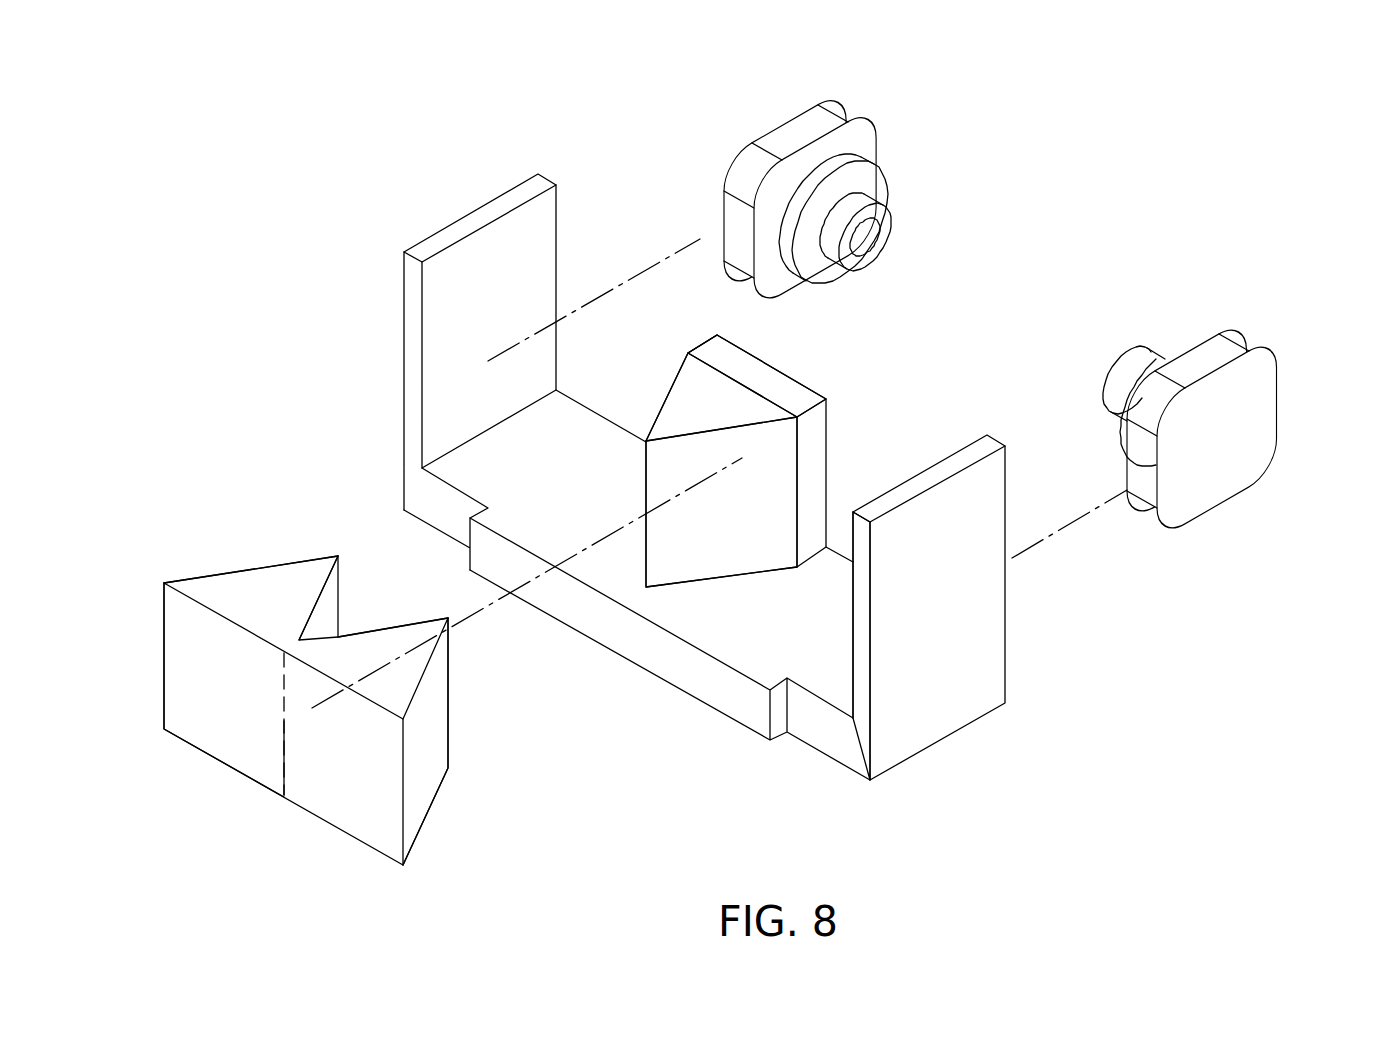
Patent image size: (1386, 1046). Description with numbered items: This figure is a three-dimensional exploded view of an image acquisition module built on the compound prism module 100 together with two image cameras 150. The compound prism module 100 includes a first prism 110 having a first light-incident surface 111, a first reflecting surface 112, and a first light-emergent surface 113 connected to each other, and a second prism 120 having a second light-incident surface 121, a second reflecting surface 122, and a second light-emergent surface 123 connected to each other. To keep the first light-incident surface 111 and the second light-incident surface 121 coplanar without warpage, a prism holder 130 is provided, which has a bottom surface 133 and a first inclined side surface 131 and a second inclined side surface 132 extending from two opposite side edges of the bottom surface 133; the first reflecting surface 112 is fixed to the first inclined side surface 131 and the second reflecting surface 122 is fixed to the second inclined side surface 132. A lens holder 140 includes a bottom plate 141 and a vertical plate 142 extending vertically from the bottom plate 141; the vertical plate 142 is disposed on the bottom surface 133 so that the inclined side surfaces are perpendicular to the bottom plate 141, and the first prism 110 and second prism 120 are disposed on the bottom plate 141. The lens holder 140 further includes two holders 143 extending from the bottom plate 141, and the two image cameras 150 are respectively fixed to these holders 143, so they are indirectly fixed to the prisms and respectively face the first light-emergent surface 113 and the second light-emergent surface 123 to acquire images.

The compound prism module 100 is at (364, 357).
The first prism 110 is at (403, 683).
The first light-incident surface 111 is at (338, 769).
The first reflecting surface 112 is at (390, 623).
The first light-emergent surface 113 is at (423, 758).
The second prism 120 is at (238, 583).
The second light-incident surface 121 is at (213, 718).
The second reflecting surface 122 is at (323, 607).
The second light-emergent surface 123 is at (250, 565).
The prism holder 130 is at (708, 398).
The first inclined side surface 131 is at (731, 523).
The second inclined side surface 132 is at (657, 407).
The bottom surface 133 is at (744, 381).
The lens holder 140 is at (850, 416).
The bottom plate 141 is at (774, 660).
The vertical plate 142 is at (816, 458).
The holder 143 is at (465, 267).
The image camera 150 is at (790, 134).